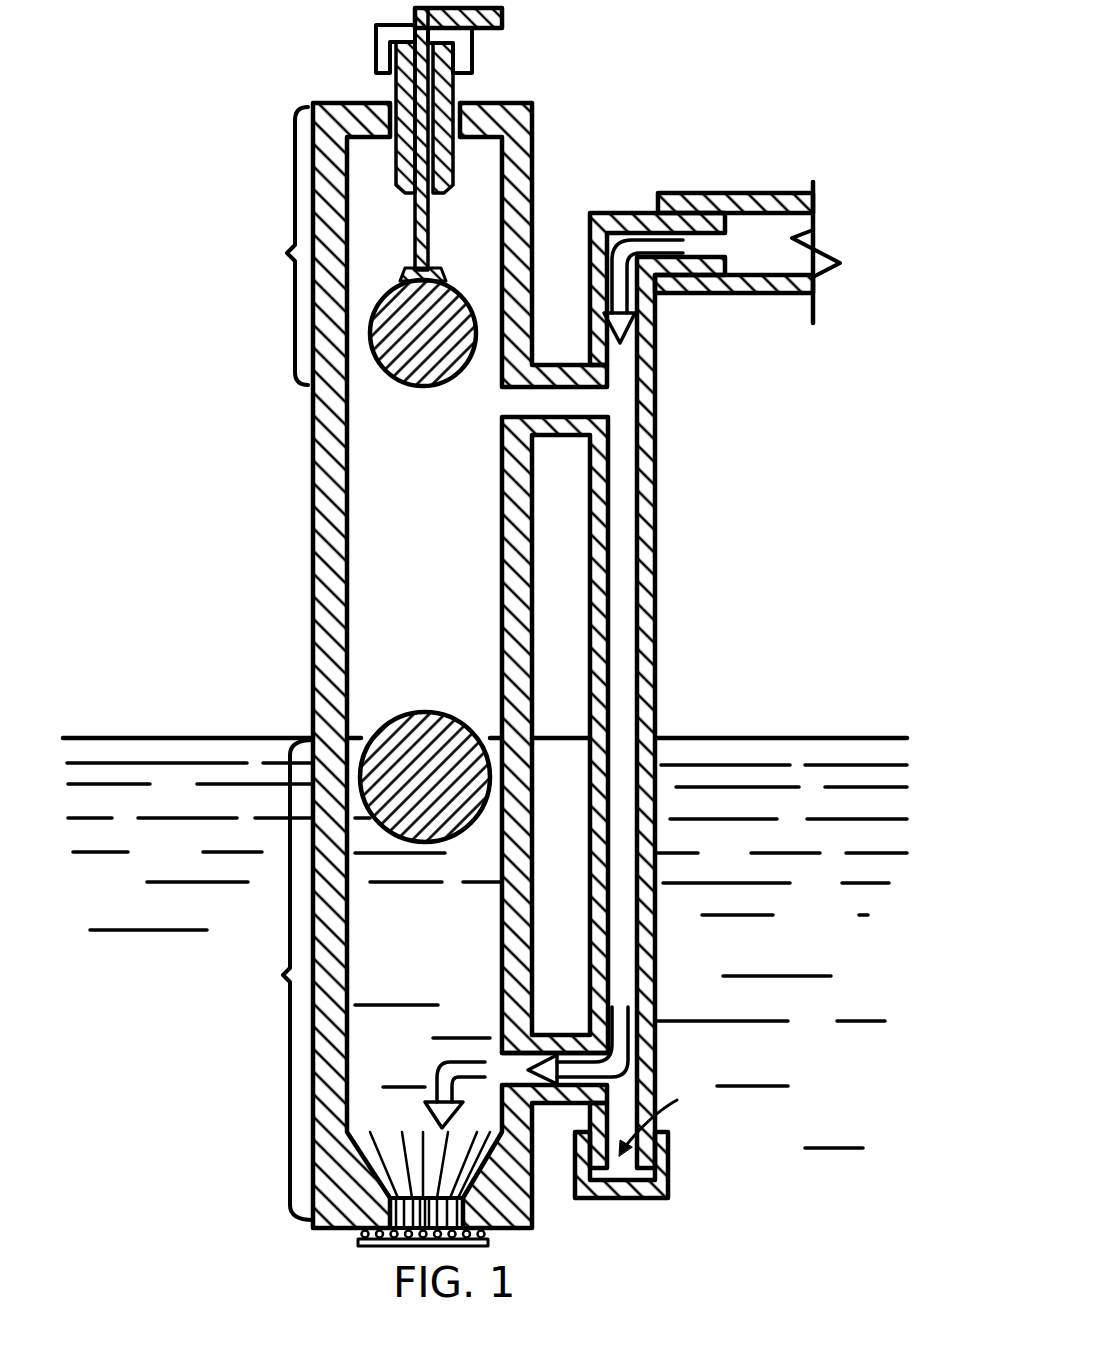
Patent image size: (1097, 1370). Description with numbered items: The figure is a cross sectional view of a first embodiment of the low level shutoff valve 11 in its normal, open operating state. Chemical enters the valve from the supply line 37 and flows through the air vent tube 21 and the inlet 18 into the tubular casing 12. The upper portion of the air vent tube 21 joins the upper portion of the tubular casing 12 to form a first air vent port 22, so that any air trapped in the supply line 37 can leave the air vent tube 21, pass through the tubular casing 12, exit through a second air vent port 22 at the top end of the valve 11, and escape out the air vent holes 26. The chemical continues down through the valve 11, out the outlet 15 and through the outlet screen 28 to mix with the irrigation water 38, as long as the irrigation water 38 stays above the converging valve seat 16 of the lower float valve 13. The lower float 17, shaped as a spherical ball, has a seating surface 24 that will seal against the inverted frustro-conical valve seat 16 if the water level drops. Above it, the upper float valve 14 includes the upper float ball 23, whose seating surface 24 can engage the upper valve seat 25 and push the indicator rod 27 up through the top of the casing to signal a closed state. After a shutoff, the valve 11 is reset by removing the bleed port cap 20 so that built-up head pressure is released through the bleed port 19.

The low level shutoff valve 11 is at (401, 665).
The tubular casing 12 is at (313, 492).
The lower float valve 13 is at (278, 980).
The upper float valve 14 is at (283, 246).
The outlet 15 is at (438, 1181).
The converging valve seat 16 is at (383, 1150).
The lower float 17 is at (420, 712).
The inlet 18 is at (548, 1033).
The bleed port 19 is at (667, 1115).
The bleed port cap 20 is at (660, 1192).
The air vent tube 21 is at (656, 496).
The air vent port 22 is at (462, 103).
The upper float ball 23 is at (414, 382).
The seating surface 24 is at (440, 272).
The upper valve seat 25 is at (407, 186).
The air vent holes 26 is at (394, 88).
The indicator rod 27 is at (500, 32).
The outlet screen 28 is at (381, 1247).
The supply line 37 is at (742, 194).
The irrigation water 38 is at (718, 770).